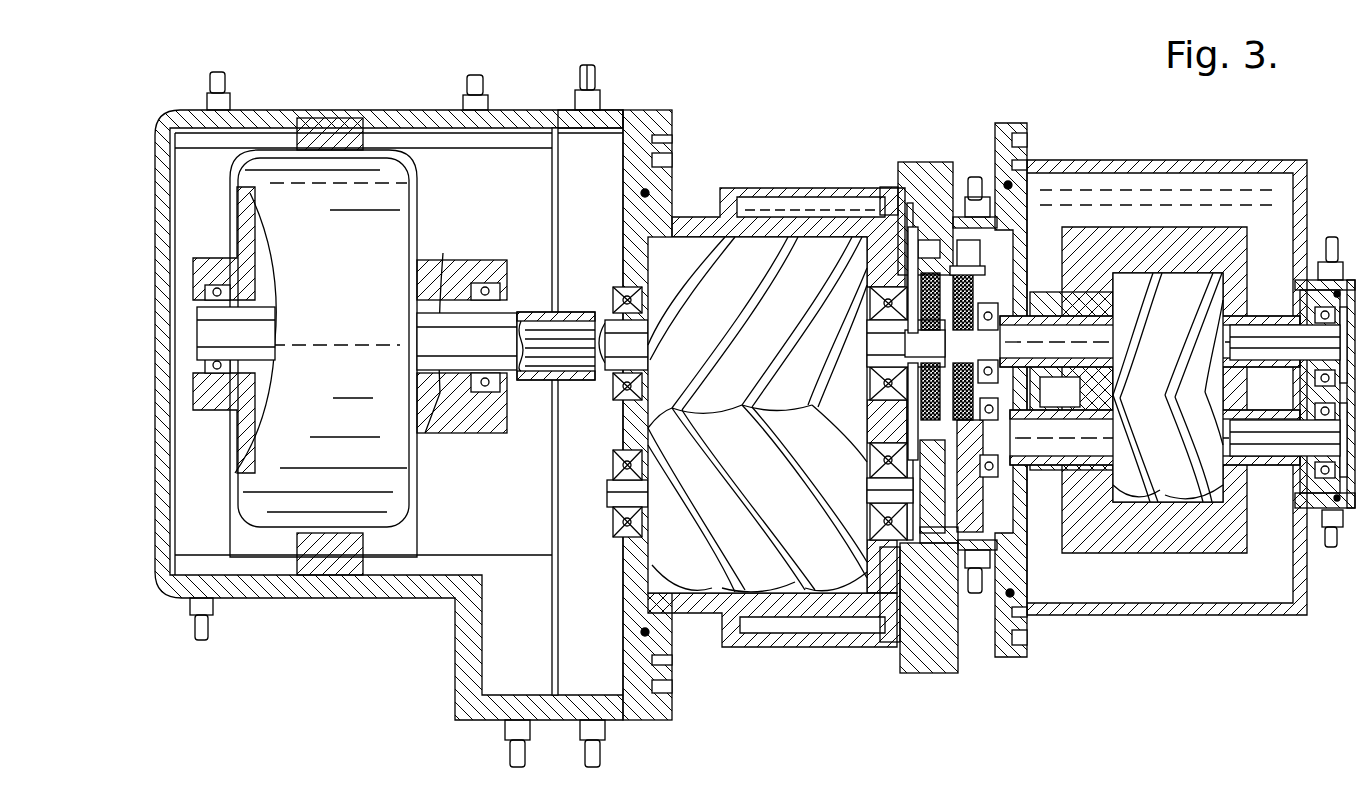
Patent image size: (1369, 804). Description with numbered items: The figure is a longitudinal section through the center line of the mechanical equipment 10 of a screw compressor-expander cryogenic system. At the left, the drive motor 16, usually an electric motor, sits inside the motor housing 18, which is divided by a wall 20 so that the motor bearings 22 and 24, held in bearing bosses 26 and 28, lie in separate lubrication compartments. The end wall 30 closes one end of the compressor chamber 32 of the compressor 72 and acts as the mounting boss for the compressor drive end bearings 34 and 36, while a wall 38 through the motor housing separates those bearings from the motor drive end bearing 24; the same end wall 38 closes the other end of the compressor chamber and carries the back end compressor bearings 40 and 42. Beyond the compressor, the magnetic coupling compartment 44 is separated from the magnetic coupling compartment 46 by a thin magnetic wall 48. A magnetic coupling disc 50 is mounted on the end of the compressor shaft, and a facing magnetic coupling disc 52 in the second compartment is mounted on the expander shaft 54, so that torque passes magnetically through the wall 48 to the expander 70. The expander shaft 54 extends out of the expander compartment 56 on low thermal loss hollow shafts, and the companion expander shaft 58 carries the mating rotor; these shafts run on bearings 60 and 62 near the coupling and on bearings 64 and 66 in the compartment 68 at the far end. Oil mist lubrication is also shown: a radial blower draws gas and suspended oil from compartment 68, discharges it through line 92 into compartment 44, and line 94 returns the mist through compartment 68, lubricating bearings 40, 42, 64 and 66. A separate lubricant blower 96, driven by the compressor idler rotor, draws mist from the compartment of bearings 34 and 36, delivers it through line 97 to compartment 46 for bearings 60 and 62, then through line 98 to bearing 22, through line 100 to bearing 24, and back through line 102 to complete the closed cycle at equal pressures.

The mechanical equipment 10 is at (770, 94).
The drive motor 16 is at (383, 168).
The motor housing 18 is at (322, 600).
The wall 20 is at (323, 118).
The motor bearing 22 is at (220, 283).
The motor bearing 24 is at (478, 300).
The bearing boss 26 is at (220, 385).
The bearing boss 28 is at (490, 425).
The end wall 30 is at (613, 188).
The compressor chamber 32 is at (767, 570).
The compressor drive end bearing 34 is at (617, 395).
The compressor drive end bearing 36 is at (620, 530).
The wall 38 is at (552, 647).
The back end compressor bearing 40 is at (870, 298).
The back end compressor bearing 42 is at (870, 462).
The magnetic coupling compartment 44 is at (930, 245).
The magnetic coupling compartment 46 is at (1012, 200).
The thin magnetic wall 48 is at (965, 245).
The magnetic coupling disc 50 is at (908, 240).
The magnetic coupling disc 52 is at (968, 272).
The expander shaft 54 is at (1065, 350).
The expander compartment 56 is at (1165, 320).
The companion expander shaft 58 is at (1083, 440).
The bearing 60 is at (990, 308).
The bearing 62 is at (997, 475).
The bearing 64 is at (1318, 310).
The bearing 66 is at (1317, 398).
The compartment 68 is at (1320, 468).
The expander 70 is at (1172, 512).
The compressor 72 is at (768, 212).
The line 92 is at (1337, 550).
The line 94 is at (1332, 235).
The lubricant blower 96 is at (607, 138).
The line 97 is at (595, 70).
The line 98 is at (208, 638).
The line 100 is at (226, 72).
The line 102 is at (508, 752).